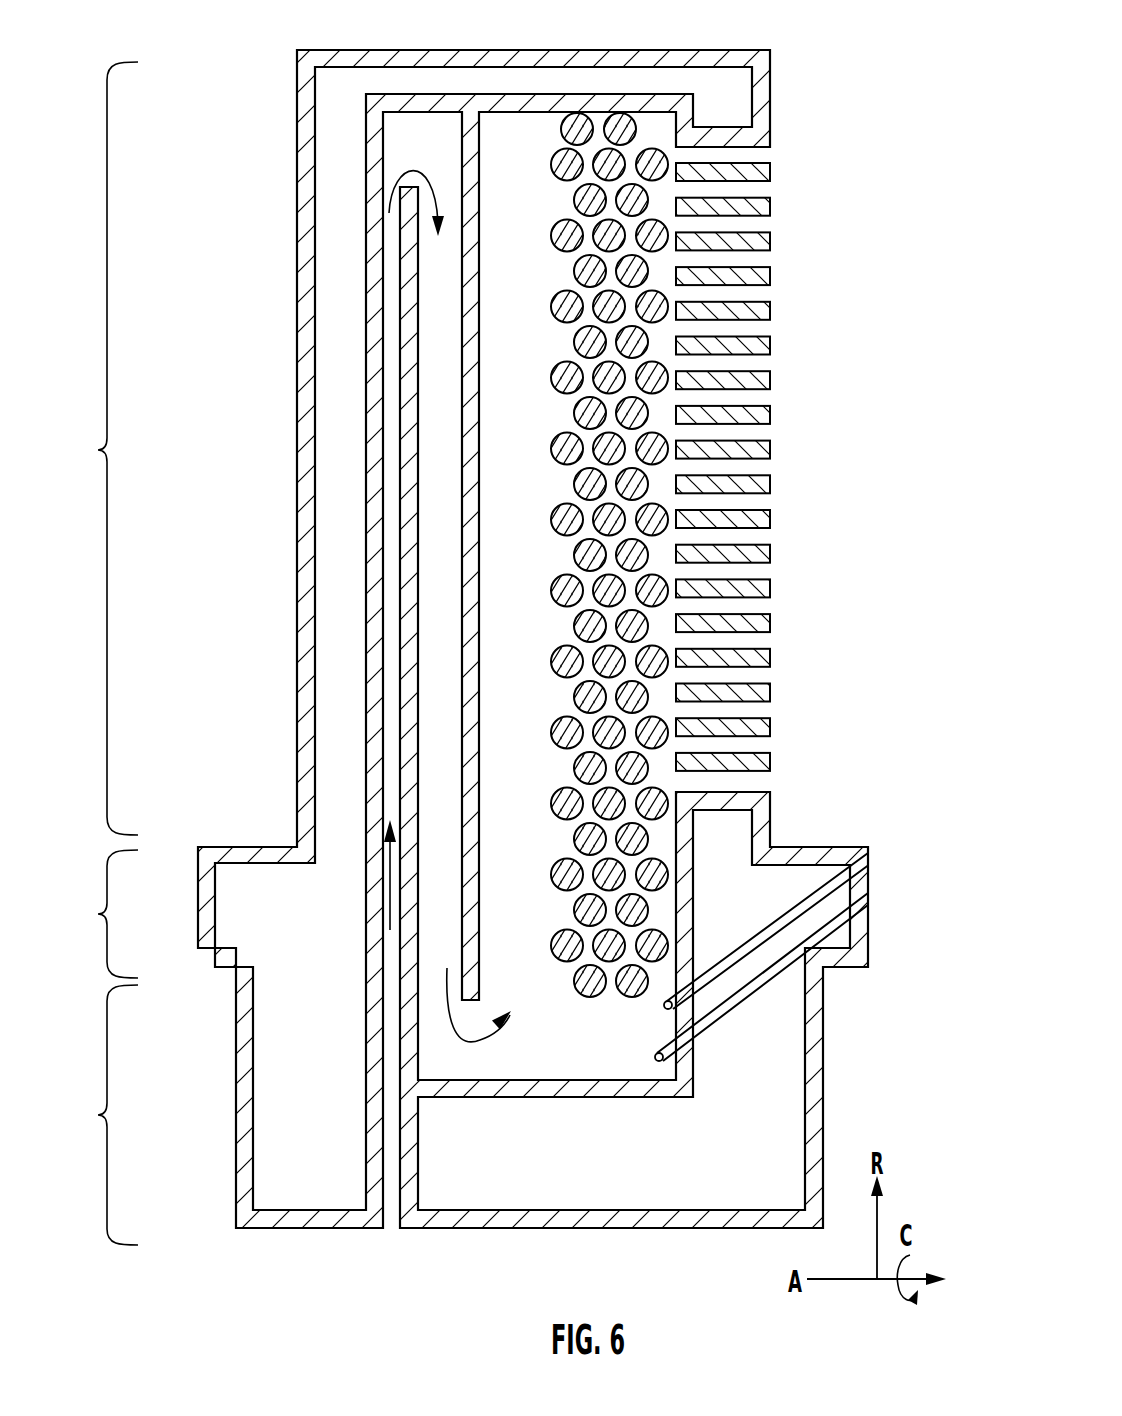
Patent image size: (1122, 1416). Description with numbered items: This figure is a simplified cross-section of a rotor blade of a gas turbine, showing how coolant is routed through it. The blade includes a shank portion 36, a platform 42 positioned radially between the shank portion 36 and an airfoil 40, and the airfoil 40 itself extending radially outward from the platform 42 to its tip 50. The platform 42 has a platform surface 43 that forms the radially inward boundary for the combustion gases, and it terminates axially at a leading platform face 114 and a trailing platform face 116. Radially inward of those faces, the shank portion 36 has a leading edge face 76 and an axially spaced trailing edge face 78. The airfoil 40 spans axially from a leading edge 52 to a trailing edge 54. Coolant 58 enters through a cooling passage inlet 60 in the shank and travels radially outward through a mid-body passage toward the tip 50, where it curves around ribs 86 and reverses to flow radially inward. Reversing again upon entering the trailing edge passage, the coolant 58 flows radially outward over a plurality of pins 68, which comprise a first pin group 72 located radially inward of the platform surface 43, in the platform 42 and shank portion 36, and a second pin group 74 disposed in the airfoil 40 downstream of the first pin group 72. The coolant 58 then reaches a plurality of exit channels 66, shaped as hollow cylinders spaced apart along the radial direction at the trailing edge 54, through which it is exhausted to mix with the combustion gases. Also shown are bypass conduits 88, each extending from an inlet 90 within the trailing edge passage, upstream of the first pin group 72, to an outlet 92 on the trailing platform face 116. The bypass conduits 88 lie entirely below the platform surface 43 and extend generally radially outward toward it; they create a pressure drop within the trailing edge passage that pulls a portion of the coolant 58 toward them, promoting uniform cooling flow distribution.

The shank portion 36 is at (96, 1115).
The airfoil 40 is at (96, 450).
The platform 42 is at (96, 914).
The platform surface 43 is at (236, 847).
The tip 50 is at (760, 62).
The leading edge 52 is at (300, 560).
The trailing edge 54 is at (770, 83).
The coolant 58 is at (420, 160).
The cooling passage inlet 60 is at (391, 1232).
The exit channels 66 is at (776, 330).
The pins 68 is at (669, 118).
The first pin group 72 is at (543, 865).
The second pin group 74 is at (545, 128).
The leading edge face 76 is at (237, 1108).
The trailing edge face 78 is at (823, 1030).
The ribs 86 is at (376, 290).
The bypass conduits 88 is at (717, 963).
The inlet 90 is at (660, 1010).
The outlet 92 is at (870, 862).
The leading platform face 114 is at (198, 905).
The trailing platform face 116 is at (868, 957).